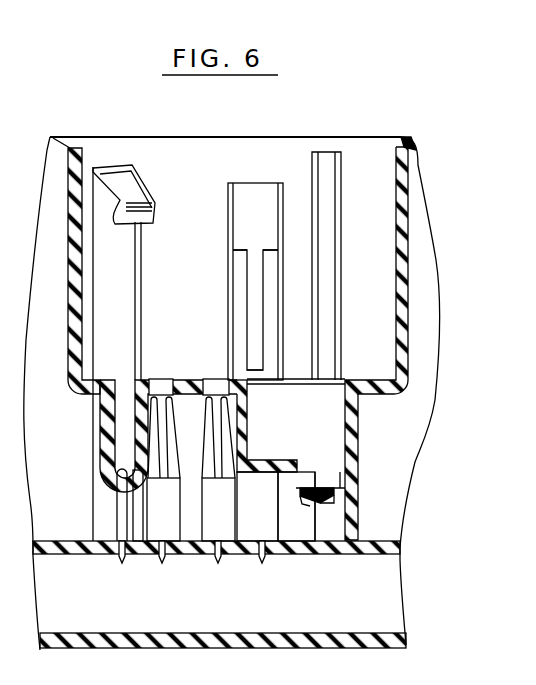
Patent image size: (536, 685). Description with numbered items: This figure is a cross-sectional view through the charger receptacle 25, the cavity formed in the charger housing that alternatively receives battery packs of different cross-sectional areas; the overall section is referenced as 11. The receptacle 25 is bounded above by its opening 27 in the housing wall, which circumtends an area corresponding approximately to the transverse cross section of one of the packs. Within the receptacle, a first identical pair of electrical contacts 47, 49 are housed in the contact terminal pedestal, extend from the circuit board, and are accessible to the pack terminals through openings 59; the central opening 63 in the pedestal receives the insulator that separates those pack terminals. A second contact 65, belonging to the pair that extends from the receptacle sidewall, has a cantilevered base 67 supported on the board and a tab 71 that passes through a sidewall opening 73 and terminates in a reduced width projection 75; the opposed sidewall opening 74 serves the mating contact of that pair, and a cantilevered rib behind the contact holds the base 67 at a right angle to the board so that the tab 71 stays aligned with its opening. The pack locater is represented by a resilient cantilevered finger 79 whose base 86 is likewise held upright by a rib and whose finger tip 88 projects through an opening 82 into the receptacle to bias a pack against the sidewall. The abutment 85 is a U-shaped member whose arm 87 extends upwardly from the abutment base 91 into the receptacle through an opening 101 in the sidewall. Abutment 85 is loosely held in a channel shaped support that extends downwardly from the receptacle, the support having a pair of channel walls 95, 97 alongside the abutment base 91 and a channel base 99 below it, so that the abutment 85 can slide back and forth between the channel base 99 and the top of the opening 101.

The electrical connector assembly 11 is at (378, 88).
The receptacle 25 is at (102, 125).
The opening 27 is at (385, 132).
The electrical contact 47 is at (147, 478).
The electrical contact 49 is at (243, 428).
The openings 59 is at (163, 380).
The central opening 63 is at (193, 382).
The electrical contact 65 is at (277, 235).
The cantilevered base 67 is at (273, 300).
The tab 71 is at (257, 226).
The sidewall opening 73 is at (228, 276).
The sidewall opening 74 is at (227, 192).
The reduced width projection 75 is at (257, 352).
The resilient cantilevered finger 79 is at (151, 161).
The opening 82 is at (142, 246).
The abutment 85 is at (389, 266).
The base 86 is at (150, 198).
The arm 87 is at (330, 343).
The finger tip 88 is at (113, 279).
The abutment base 91 is at (362, 532).
The channel wall 95 is at (302, 506).
The channel wall 97 is at (351, 476).
The channel base 99 is at (333, 506).
The opening 101 is at (343, 307).